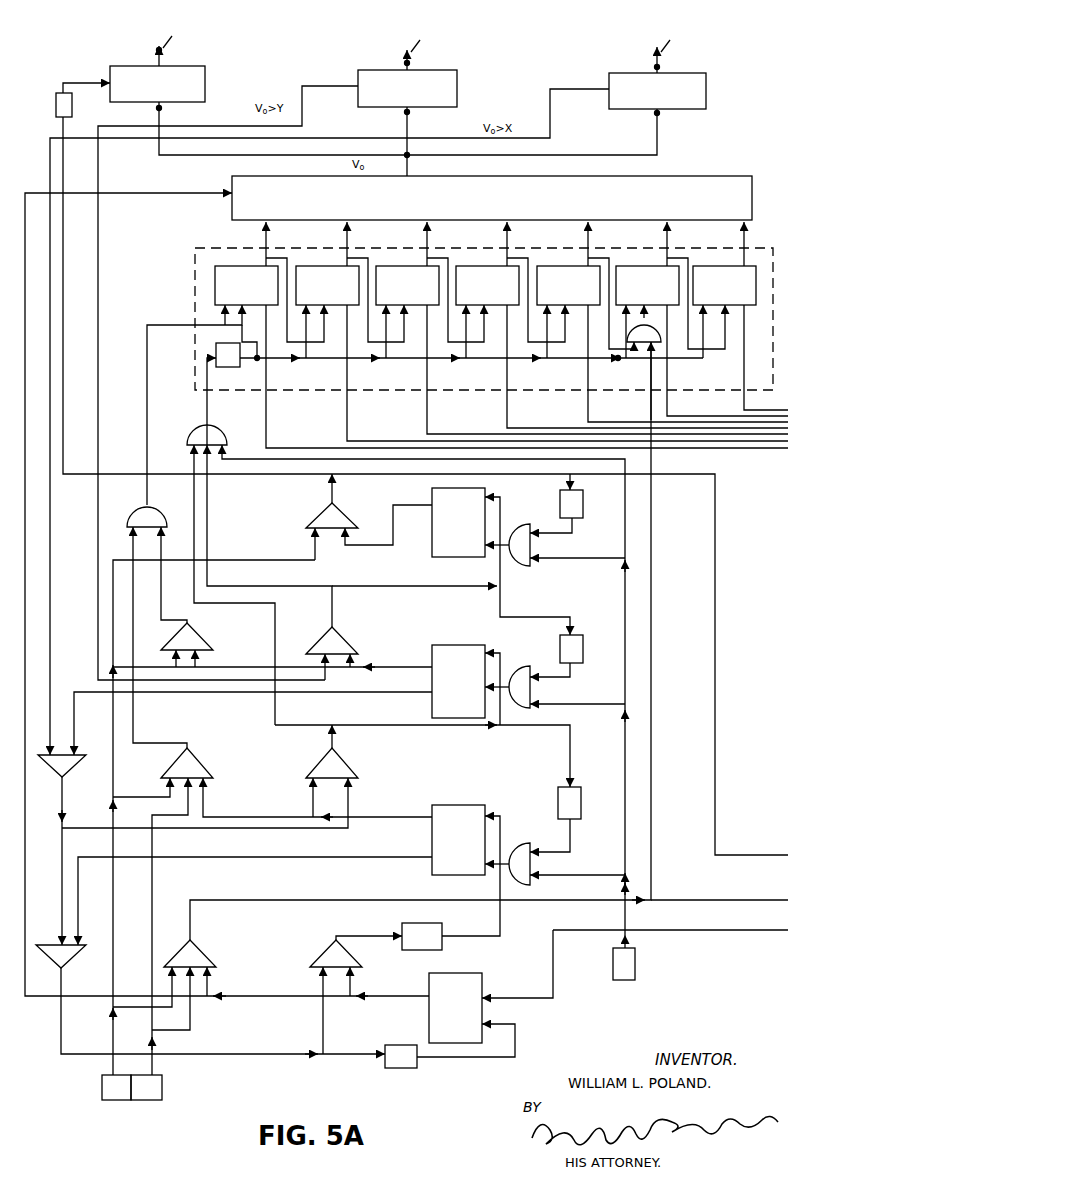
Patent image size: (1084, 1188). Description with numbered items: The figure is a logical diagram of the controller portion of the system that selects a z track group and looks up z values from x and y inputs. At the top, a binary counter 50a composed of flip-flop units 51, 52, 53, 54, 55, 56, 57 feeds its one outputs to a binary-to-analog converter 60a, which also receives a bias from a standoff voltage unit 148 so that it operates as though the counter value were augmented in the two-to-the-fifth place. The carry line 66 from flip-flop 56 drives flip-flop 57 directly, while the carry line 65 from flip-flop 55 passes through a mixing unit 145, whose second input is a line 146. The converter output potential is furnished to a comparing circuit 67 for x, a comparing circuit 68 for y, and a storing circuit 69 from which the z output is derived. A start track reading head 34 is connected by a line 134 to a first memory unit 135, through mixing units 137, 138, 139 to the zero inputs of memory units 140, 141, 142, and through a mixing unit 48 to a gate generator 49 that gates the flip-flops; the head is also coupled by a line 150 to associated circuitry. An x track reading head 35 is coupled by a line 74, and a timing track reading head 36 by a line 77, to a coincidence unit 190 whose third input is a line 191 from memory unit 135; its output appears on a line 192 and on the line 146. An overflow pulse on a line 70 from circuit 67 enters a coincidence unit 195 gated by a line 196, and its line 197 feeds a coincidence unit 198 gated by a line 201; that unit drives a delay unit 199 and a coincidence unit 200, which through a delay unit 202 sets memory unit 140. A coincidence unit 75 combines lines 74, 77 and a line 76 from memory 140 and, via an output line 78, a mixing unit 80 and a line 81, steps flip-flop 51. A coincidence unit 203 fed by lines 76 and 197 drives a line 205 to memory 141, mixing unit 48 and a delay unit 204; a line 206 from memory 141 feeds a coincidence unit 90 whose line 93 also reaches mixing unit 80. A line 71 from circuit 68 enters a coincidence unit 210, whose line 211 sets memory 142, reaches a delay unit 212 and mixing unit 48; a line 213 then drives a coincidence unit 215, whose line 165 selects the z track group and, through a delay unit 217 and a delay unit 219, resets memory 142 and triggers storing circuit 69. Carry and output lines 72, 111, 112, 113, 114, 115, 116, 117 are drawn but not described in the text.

The start track reading head 34 is at (637, 963).
The x track reading head 35 is at (163, 1090).
The timing track reading head 36 is at (102, 1090).
The mixing unit 48 is at (196, 428).
The gate generator 49 is at (214, 356).
The binary counter 50a is at (195, 283).
The flip-flop unit 51 is at (240, 266).
The flip-flop unit 52 is at (325, 266).
The flip-flop unit 53 is at (405, 266).
The flip-flop unit 54 is at (485, 266).
The flip-flop unit 55 is at (568, 266).
The flip-flop unit 56 is at (648, 266).
The flip-flop unit 57 is at (728, 266).
The binary-to-analog converter 60a is at (232, 205).
The carry line 65 is at (628, 358).
The carry line 66 is at (410, 160).
The comparing circuit 67 is at (632, 73).
The comparing circuit 68 is at (386, 70).
The storing circuit 69 is at (207, 68).
The line 70 is at (557, 96).
The line 71 is at (345, 92).
The store Z input line 72 is at (96, 80).
The line 74 is at (157, 1033).
The coincidence unit 75 is at (210, 768).
The line 76 is at (246, 817).
The line 77 is at (236, 560).
The output line 78 is at (134, 730).
The mixing unit 80 is at (154, 507).
The line 81 is at (148, 326).
The coincidence unit 90 is at (201, 647).
The line 93 is at (162, 568).
The flip-flop output line 111 is at (270, 433).
The flip-flop output line 112 is at (350, 431).
The flip-flop output line 113 is at (430, 427).
The flip-flop output line 114 is at (510, 422).
The flip-flop output line 115 is at (590, 418).
The flip-flop output line 116 is at (668, 414).
The flip-flop output line 117 is at (748, 405).
The line 134 is at (622, 882).
The first memory unit 135 is at (428, 1017).
The mixing unit 137 is at (521, 846).
The mixing unit 138 is at (512, 664).
The mixing unit 139 is at (522, 562).
The memory unit 140 is at (468, 805).
The memory unit 141 is at (456, 645).
The memory unit 142 is at (490, 493).
The mixing unit 145 is at (662, 338).
The line 146 is at (652, 668).
The standoff voltage unit 148 is at (253, 176).
The line 150 is at (695, 932).
The line 165 is at (408, 475).
The coincidence unit 190 is at (206, 952).
The line 191 is at (195, 192).
The line 192 is at (690, 904).
The coincidence unit 195 is at (70, 777).
The line 196 is at (357, 693).
The line 197 is at (60, 826).
The coincidence unit 198 is at (52, 942).
The delay unit 199 is at (405, 1069).
The coincidence unit 200 is at (330, 957).
The line 201 is at (350, 860).
The delay unit 202 is at (442, 942).
The coincidence unit 203 is at (358, 768).
The delay unit 204 is at (582, 797).
The line 205 is at (304, 727).
The line 206 is at (228, 663).
The coincidence unit 210 is at (352, 648).
The line 211 is at (395, 588).
The delay unit 212 is at (583, 640).
The line 213 is at (359, 546).
The coincidence unit 215 is at (320, 510).
The delay unit 217 is at (584, 510).
The delay unit 219 is at (56, 108).